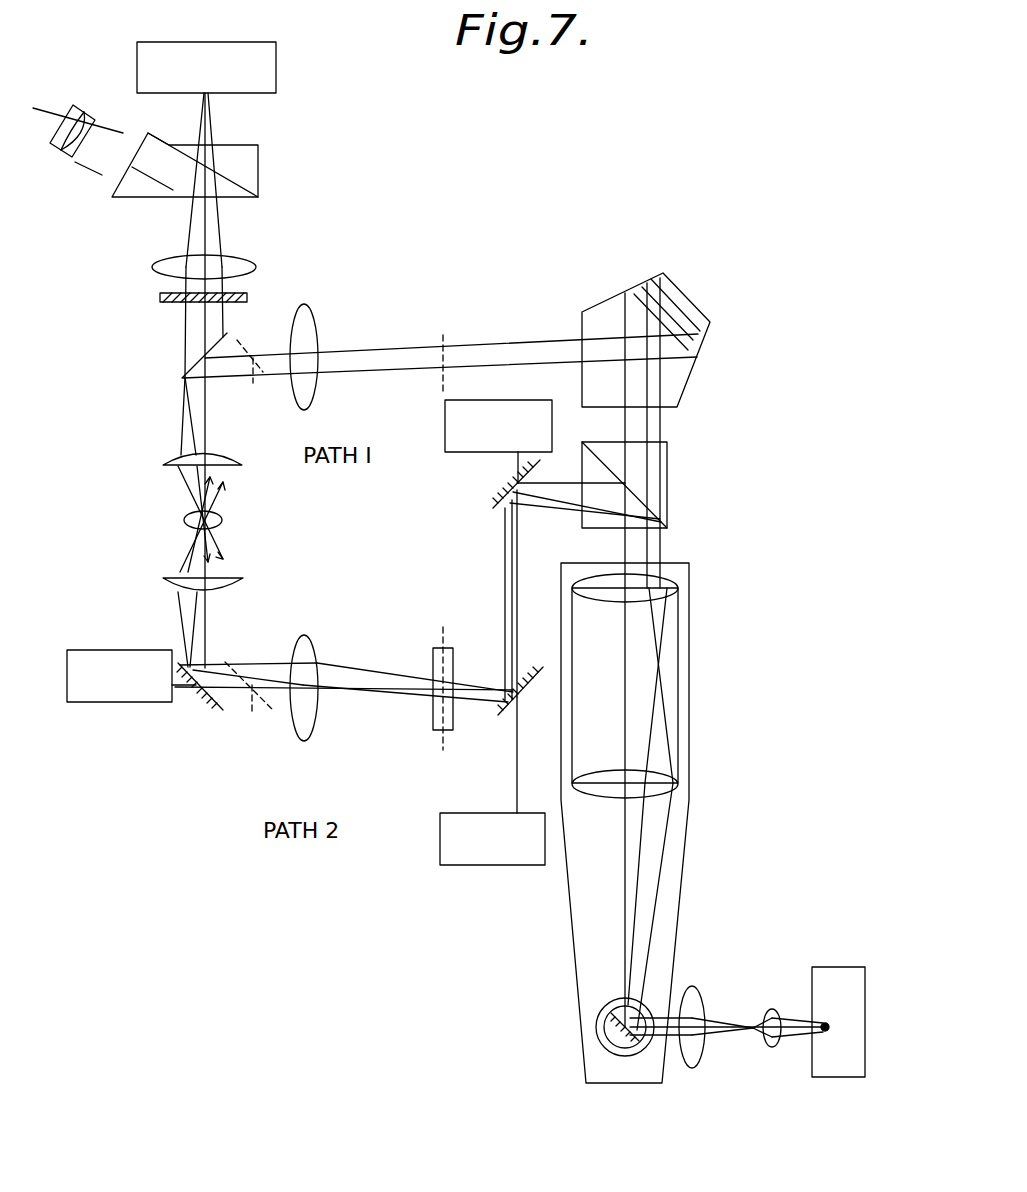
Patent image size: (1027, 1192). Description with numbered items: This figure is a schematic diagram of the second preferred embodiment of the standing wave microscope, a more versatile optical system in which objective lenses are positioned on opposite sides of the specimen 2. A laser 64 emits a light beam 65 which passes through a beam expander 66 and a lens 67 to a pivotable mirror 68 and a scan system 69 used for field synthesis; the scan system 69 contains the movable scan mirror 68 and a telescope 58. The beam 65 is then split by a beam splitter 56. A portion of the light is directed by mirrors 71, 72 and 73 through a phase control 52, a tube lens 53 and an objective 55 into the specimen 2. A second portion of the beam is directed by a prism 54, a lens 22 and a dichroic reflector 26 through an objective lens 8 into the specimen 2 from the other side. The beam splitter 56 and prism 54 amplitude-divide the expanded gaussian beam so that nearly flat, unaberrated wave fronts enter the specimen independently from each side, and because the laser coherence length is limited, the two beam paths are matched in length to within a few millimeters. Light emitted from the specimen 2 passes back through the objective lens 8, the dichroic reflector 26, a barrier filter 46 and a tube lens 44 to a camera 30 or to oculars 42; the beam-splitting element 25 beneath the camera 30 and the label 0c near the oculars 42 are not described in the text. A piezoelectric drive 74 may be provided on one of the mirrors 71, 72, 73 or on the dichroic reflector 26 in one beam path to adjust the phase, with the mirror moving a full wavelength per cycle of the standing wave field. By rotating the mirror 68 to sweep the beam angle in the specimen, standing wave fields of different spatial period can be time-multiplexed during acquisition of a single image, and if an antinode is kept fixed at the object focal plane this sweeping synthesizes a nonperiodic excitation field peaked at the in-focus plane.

The camera 30 is at (222, 40).
The object/light source 0c is at (36, 82).
The beam splitter 25 is at (233, 175).
The oculars 42 is at (73, 153).
The tube lens 44 is at (233, 253).
The barrier filter 46 is at (160, 298).
The lens 22 is at (317, 333).
The dichroic reflector 26 is at (183, 378).
The objective lens 8 is at (170, 466).
The specimen 2 is at (188, 520).
The objective 55 is at (170, 578).
The piezoelectric drive 74 is at (85, 702).
The mirror 73 is at (225, 712).
The tube lens 53 is at (290, 723).
The phase control 52 is at (433, 717).
The mirror 72 is at (502, 708).
The mirror 71 is at (495, 508).
The prism 54 is at (693, 300).
The beam splitter 56 is at (667, 460).
The light beam 65 is at (663, 552).
The telescope 58 is at (678, 673).
The scan system 69 is at (682, 895).
The pivotable mirror 68 is at (613, 1037).
The lens 67 is at (697, 1003).
The beam expander 66 is at (765, 1043).
The laser 64 is at (827, 968).